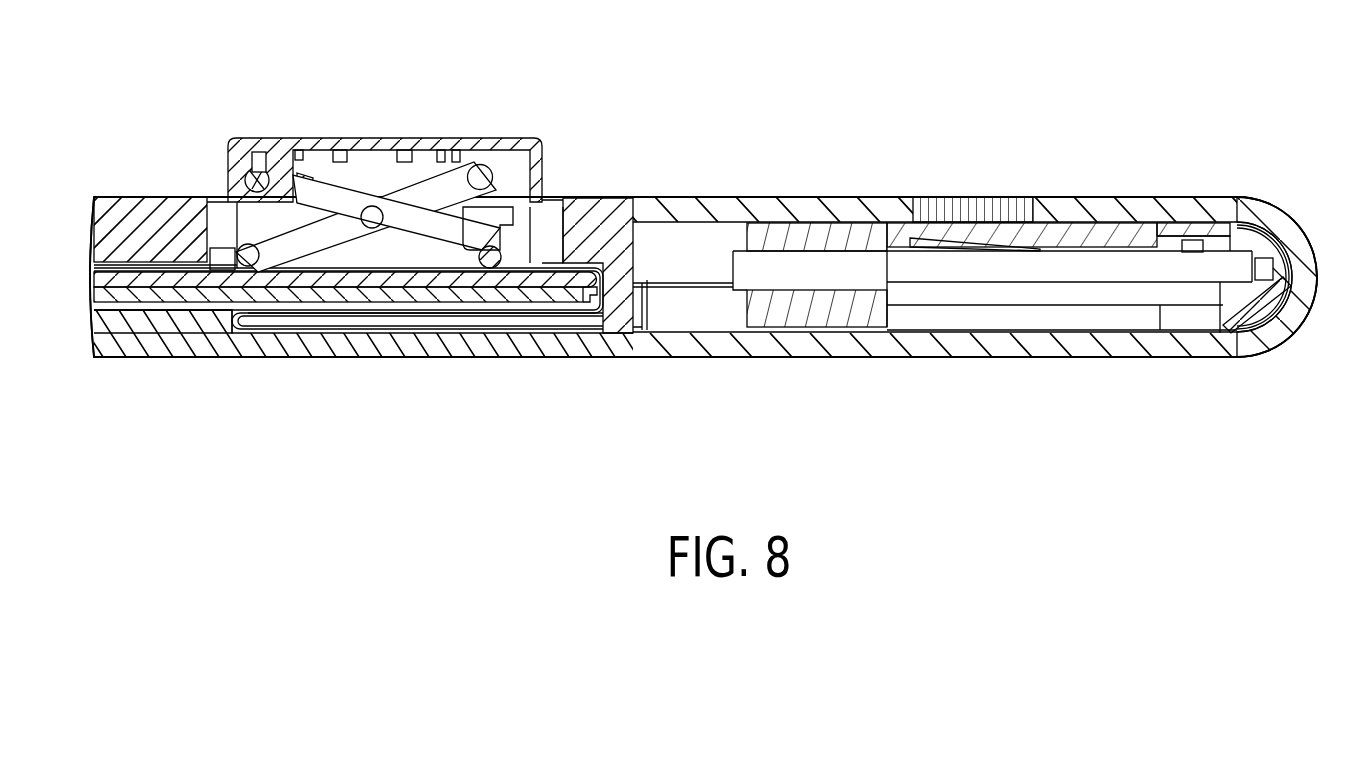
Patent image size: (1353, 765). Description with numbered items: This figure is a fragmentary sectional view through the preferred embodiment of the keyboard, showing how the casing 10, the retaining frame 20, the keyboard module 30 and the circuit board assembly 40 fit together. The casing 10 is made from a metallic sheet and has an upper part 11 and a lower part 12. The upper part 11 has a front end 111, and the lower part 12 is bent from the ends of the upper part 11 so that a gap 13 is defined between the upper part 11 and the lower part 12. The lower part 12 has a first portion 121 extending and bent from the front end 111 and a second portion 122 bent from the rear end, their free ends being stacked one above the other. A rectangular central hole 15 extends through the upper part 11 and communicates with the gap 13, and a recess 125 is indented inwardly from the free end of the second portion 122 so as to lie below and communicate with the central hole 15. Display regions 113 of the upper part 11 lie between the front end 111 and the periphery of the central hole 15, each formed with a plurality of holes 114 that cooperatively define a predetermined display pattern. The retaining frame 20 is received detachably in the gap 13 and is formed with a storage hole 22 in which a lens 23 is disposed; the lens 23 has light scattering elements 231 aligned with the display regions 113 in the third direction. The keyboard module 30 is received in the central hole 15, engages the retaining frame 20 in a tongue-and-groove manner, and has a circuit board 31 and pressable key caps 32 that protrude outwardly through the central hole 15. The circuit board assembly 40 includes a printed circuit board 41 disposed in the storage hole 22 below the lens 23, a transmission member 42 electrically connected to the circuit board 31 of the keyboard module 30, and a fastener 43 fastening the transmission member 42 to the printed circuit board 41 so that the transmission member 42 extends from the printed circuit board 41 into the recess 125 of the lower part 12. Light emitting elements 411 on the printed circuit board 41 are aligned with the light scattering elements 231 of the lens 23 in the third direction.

The casing 10 is at (1152, 186).
The upper part 11 is at (1068, 197).
The front end 111 is at (1317, 279).
The display regions 113 is at (957, 185).
The holes 114 is at (989, 236).
The lower part 12 is at (448, 357).
The first portion 121 is at (1027, 348).
The second portion 122 is at (105, 324).
The recess 125 is at (191, 322).
The gap 13 is at (133, 313).
The central hole 15 is at (635, 197).
The retaining frame 20 is at (1249, 328).
The storage hole 22 is at (1160, 293).
The lens 23 is at (896, 236).
The light scattering elements 231 is at (920, 247).
The keyboard module 30 is at (395, 150).
The circuit board 31 is at (100, 212).
The pressable key caps 32 is at (380, 142).
The circuit board assembly 40 is at (1221, 256).
The printed circuit board 41 is at (1105, 263).
The light emitting elements 411 is at (1010, 232).
The transmission member 42 is at (637, 357).
The fastener 43 is at (810, 240).